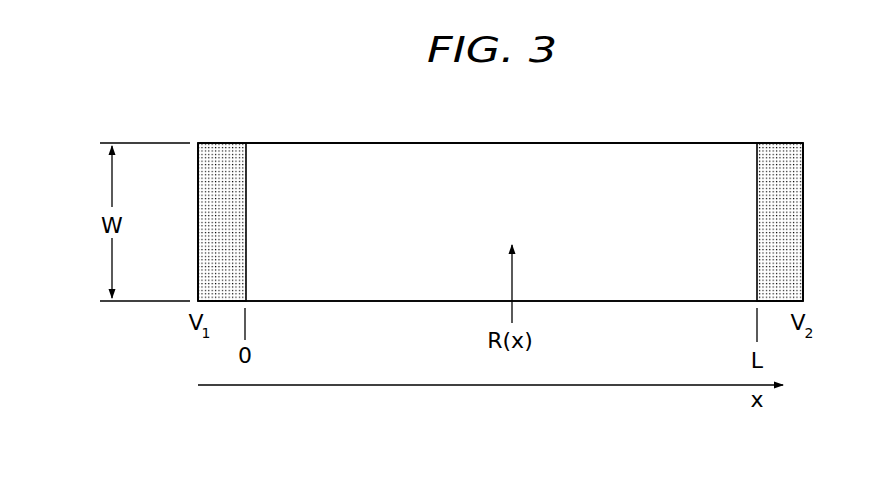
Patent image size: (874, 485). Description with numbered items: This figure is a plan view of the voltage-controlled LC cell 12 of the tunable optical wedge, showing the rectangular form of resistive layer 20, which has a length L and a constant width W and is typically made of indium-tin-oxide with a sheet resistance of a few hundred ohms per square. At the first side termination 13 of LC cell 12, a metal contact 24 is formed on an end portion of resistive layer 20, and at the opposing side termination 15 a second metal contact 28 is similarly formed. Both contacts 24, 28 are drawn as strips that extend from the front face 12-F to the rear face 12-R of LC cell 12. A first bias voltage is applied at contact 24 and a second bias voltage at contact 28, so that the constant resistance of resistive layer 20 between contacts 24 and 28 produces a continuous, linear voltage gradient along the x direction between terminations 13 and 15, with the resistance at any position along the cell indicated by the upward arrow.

The voltage-controlled LC cell 12 is at (496, 127).
The rear face 12-R is at (320, 143).
The front face 12-F is at (320, 301).
The first side termination 13 is at (190, 213).
The opposing side termination 15 is at (815, 211).
The resistive layer 20 is at (670, 148).
The first contact 24 is at (223, 143).
The second contact 28 is at (786, 143).